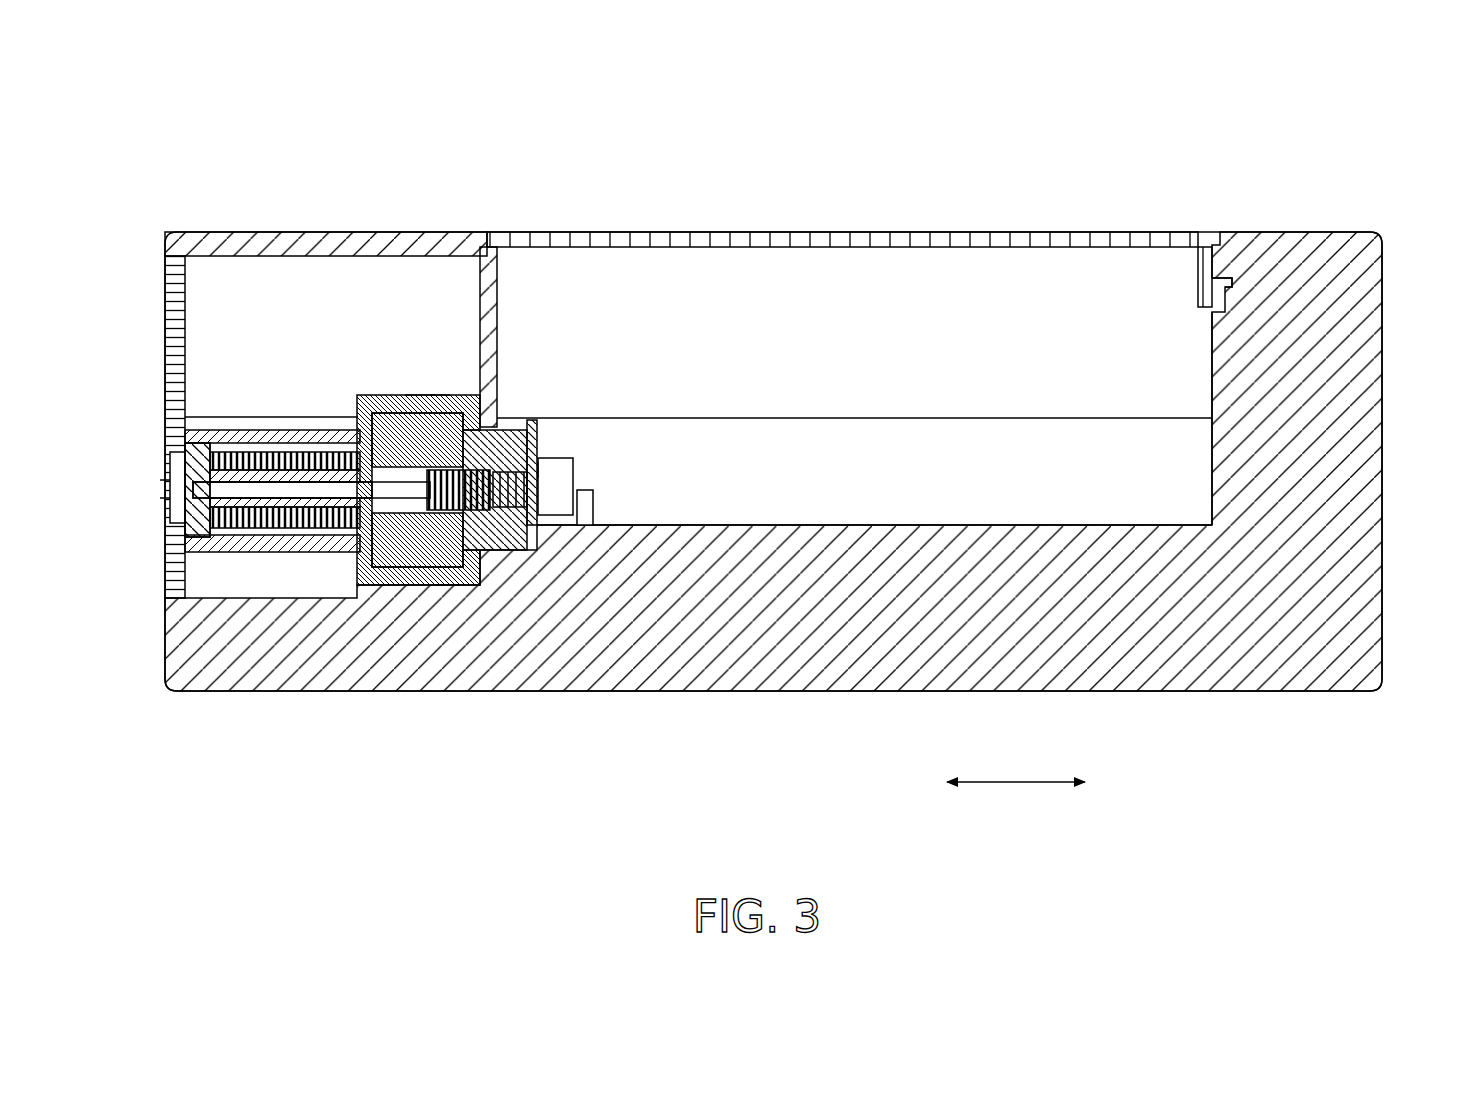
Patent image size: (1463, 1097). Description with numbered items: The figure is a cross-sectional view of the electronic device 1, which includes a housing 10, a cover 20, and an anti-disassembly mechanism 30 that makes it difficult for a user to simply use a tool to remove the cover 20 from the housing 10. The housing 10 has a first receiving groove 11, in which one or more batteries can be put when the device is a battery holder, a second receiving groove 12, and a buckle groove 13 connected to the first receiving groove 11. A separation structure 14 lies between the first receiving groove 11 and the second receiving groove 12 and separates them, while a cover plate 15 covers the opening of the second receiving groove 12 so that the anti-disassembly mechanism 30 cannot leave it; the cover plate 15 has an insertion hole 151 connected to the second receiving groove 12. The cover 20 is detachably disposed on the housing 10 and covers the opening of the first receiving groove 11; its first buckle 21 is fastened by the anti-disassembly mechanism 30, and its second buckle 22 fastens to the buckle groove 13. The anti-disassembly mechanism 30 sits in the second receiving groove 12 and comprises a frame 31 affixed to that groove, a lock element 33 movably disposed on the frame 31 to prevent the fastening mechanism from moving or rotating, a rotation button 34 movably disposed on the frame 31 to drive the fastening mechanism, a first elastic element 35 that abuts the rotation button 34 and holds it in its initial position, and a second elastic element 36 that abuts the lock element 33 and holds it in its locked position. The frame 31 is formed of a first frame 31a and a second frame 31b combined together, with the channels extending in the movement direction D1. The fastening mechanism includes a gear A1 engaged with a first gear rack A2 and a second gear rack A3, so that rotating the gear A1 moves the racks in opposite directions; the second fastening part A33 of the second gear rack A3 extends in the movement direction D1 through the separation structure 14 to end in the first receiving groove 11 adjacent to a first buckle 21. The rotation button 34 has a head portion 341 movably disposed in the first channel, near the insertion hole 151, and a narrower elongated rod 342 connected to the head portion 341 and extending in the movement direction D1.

The electronic device 1 is at (1382, 95).
The housing 10 is at (1273, 665).
The first receiving groove 11 is at (880, 382).
The second receiving groove 12 is at (320, 365).
The buckle groove 13 is at (1212, 327).
The separation structure 14 is at (493, 312).
The cover plate 15 is at (187, 312).
The insertion hole 151 is at (172, 483).
The cover 20 is at (968, 230).
The first buckle 21 is at (580, 527).
The second buckle 22 is at (1232, 283).
The anti-disassembly mechanism 30 is at (258, 405).
The frame 31 is at (418, 490).
The first frame 31a is at (442, 570).
The second frame 31b is at (383, 395).
The lock element 33 is at (492, 467).
The rotation button 34 is at (150, 755).
The head portion 341 is at (183, 535).
The rod 342 is at (270, 500).
The first elastic element 35 is at (305, 450).
The second elastic element 36 is at (512, 512).
The gear A1 is at (436, 395).
The first gear rack A2 is at (452, 562).
The second gear rack A3 is at (420, 395).
The second fastening part A33 is at (560, 470).
The movement direction D1 is at (1016, 763).